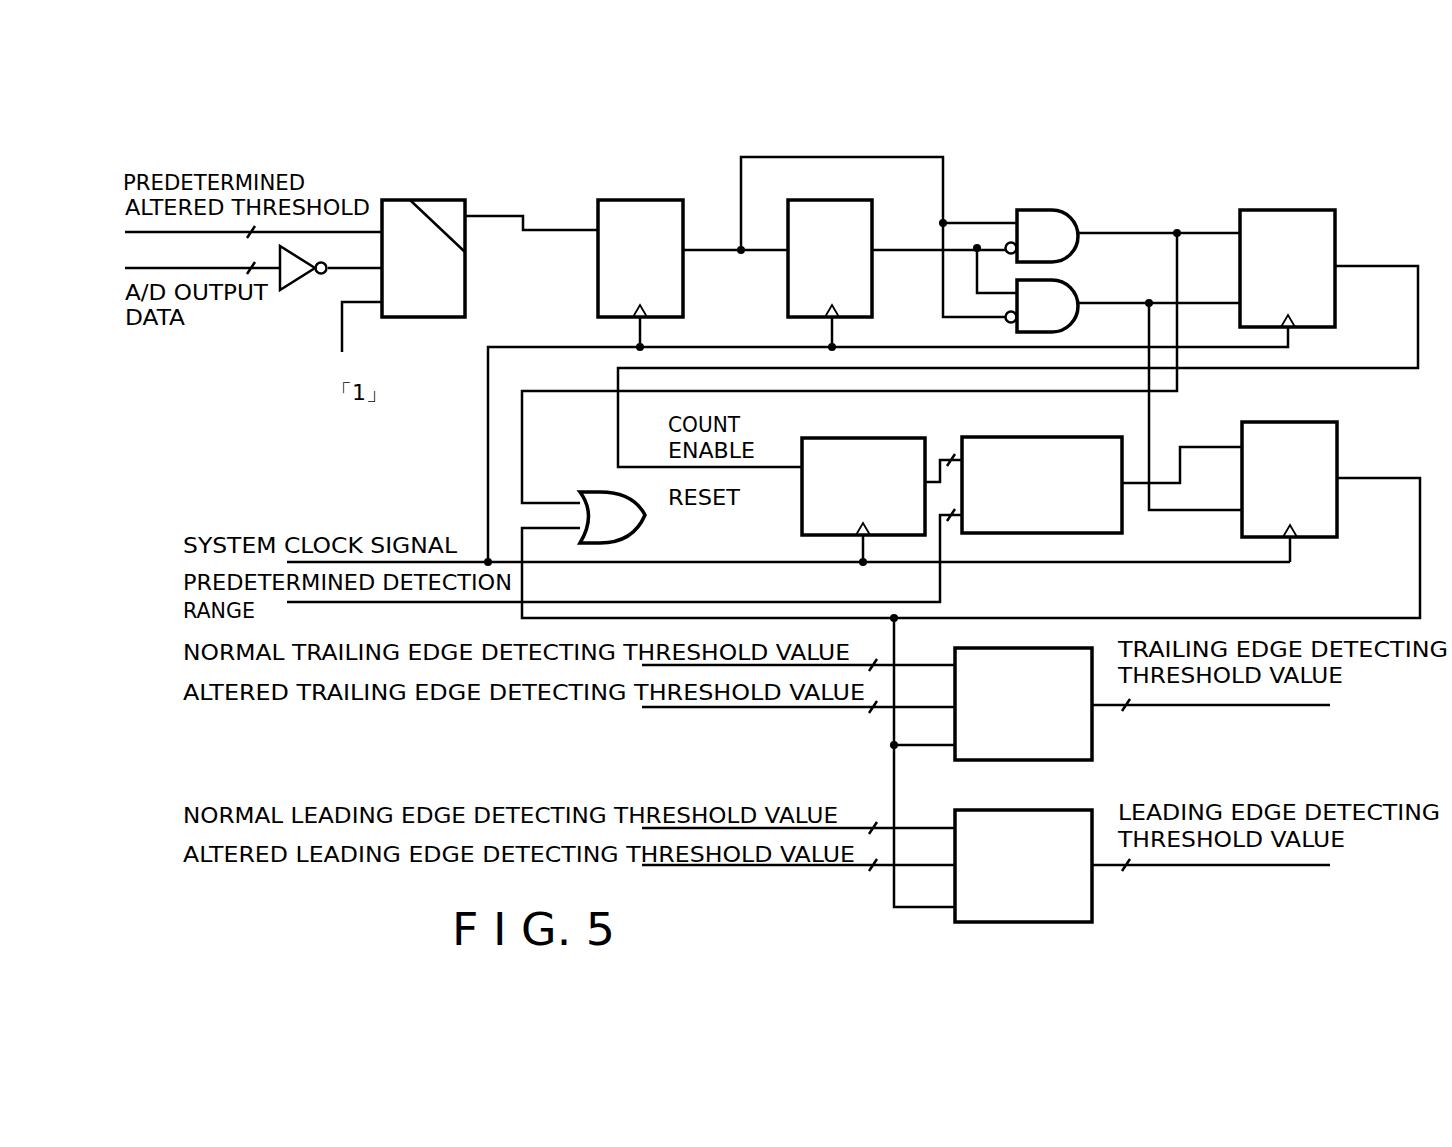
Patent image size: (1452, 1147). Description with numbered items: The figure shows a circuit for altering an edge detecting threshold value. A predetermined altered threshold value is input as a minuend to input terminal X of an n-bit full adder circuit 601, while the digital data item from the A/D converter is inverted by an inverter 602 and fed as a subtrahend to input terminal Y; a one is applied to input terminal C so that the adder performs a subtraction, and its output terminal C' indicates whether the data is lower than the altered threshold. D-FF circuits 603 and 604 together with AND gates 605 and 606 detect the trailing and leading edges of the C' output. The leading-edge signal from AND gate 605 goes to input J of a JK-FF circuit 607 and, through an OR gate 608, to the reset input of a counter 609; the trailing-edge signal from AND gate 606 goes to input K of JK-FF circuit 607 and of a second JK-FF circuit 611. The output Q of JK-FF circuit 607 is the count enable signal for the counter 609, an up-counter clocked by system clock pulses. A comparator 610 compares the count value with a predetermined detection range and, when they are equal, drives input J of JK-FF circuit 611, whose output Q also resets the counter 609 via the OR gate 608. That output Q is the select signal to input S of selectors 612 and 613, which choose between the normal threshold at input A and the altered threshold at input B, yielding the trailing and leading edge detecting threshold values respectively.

The full adder circuit 601 is at (440, 200).
The inverter 602 is at (292, 290).
The D-FF circuit 603 is at (635, 200).
The D-FF circuit 604 is at (862, 200).
The AND gate 605 is at (1030, 210).
The AND gate 606 is at (1075, 287).
The JK-FF circuit 607 is at (1272, 210).
The OR gate 608 is at (586, 492).
The counter 609 is at (802, 530).
The comparator 610 is at (1122, 515).
The JK-FF circuit 611 is at (1275, 422).
The selector 612 is at (1092, 733).
The selector 613 is at (1092, 893).